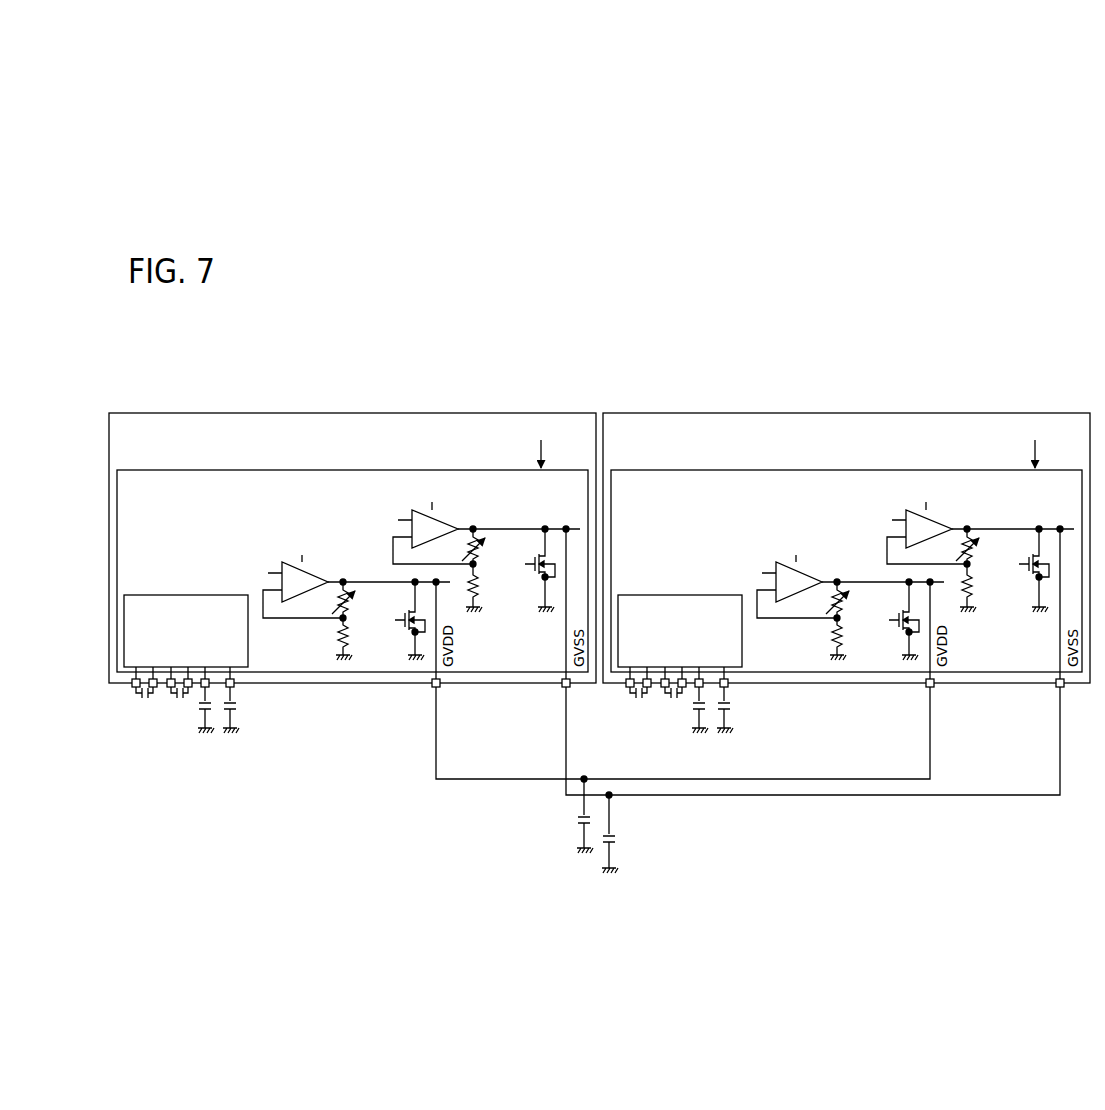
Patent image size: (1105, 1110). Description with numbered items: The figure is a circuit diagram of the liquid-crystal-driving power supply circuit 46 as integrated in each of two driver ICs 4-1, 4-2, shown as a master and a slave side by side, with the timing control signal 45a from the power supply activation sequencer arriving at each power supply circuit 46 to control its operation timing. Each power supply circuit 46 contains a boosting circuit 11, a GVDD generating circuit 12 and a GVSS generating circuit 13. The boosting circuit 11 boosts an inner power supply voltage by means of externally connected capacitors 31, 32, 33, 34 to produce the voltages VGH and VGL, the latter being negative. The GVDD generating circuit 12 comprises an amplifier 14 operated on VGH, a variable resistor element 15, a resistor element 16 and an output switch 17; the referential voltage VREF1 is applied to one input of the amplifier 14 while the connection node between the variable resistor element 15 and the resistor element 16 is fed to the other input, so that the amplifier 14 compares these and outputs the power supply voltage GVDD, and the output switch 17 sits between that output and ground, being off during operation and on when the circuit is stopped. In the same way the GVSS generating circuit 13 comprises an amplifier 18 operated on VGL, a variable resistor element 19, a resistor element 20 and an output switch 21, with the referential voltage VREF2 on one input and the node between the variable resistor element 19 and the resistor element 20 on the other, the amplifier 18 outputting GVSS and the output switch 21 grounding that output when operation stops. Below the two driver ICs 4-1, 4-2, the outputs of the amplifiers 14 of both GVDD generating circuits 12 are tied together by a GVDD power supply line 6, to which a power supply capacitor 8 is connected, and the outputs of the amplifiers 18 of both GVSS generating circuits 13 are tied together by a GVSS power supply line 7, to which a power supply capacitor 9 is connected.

The driver IC 4-2 is at (340, 412).
The driver IC 4-1 is at (834, 412).
The liquid-crystal-driving power supply circuit 46 is at (338, 469).
The timing control signal 45a is at (541, 441).
The GVSS generating circuit 13 is at (508, 523).
The GVDD generating circuit 12 is at (274, 563).
The boosting circuit 11 is at (155, 595).
The amplifier 14 is at (330, 581).
The variable resistor element 15 is at (352, 602).
The resistor element 16 is at (336, 641).
The output switch 17 is at (405, 624).
The amplifier 18 is at (457, 529).
The variable resistor element 19 is at (476, 551).
The resistor element 20 is at (479, 596).
The output switch 21 is at (535, 572).
The externally-connected capacitor 31 is at (143, 702).
The externally-connected capacitor 32 is at (178, 702).
The externally-connected capacitor 33 is at (212, 712).
The externally-connected capacitor 34 is at (236, 712).
The GVDD power supply line 6 is at (494, 777).
The GVSS power supply line 7 is at (823, 797).
The power supply capacitor 8 is at (578, 821).
The power supply capacitor 9 is at (617, 840).